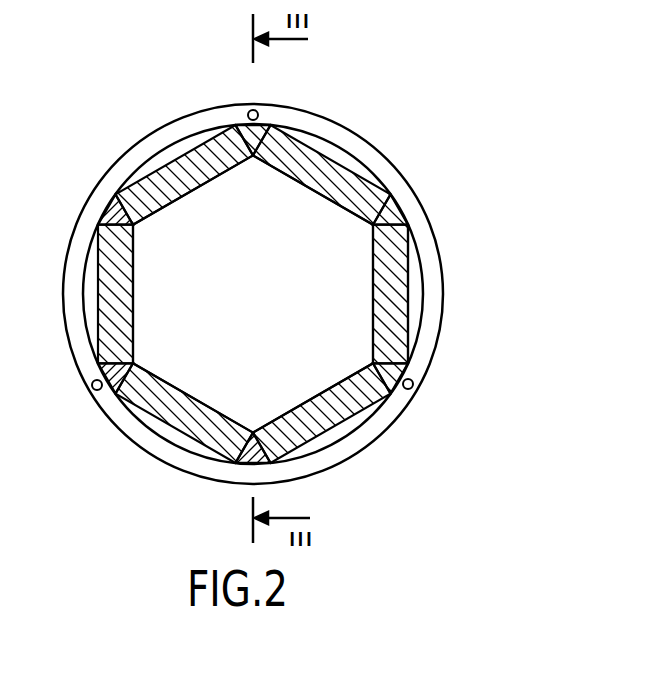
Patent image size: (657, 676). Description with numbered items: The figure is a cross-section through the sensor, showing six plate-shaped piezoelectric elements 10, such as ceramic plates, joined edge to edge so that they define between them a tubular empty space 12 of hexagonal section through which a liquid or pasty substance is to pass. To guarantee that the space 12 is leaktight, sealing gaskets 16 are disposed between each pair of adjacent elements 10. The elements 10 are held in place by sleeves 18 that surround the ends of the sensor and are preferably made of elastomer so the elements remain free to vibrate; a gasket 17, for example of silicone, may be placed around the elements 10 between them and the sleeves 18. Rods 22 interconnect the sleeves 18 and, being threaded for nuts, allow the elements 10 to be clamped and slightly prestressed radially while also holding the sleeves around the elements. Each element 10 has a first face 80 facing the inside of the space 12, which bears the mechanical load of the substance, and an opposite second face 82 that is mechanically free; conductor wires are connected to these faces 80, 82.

The piezoelectric elements 10 is at (244, 338).
The tubular empty space 12 is at (268, 309).
The sealing gaskets 16 is at (107, 212).
The gasket 17 is at (327, 151).
The sleeves 18 is at (152, 142).
The rods 22 is at (253, 110).
The first faces 80 is at (269, 338).
The second faces 82 is at (412, 276).